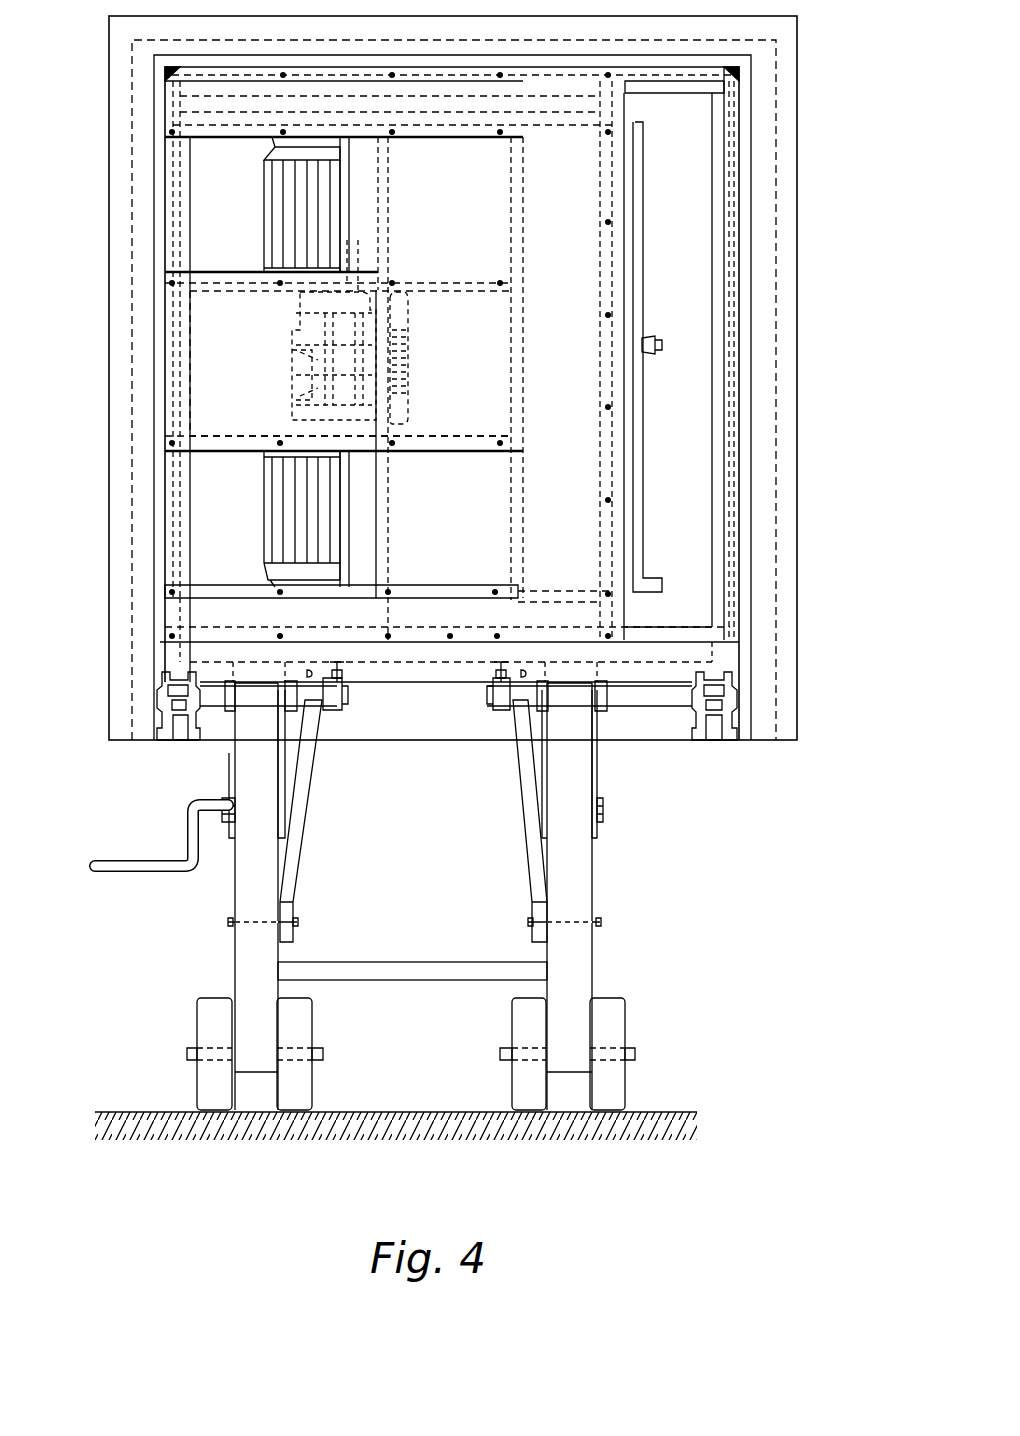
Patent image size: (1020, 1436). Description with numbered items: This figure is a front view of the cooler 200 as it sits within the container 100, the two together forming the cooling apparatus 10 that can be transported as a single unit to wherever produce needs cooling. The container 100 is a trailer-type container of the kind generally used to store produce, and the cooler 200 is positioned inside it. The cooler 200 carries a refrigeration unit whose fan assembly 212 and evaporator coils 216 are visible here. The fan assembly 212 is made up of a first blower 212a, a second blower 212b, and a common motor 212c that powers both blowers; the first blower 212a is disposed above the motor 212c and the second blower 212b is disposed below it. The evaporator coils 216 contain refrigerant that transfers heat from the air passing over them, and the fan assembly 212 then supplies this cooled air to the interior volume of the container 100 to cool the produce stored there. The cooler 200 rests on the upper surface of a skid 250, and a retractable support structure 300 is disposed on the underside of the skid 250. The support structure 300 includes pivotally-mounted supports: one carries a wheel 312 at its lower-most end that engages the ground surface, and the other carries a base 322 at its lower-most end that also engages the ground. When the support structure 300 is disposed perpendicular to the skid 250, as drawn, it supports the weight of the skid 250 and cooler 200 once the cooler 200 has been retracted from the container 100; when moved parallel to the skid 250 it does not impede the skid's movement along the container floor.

The cooling apparatus 10 is at (823, 143).
The container 100 is at (792, 322).
The cooler 200 is at (682, 482).
The evaporator coils 216 is at (643, 272).
The fan assembly 212 is at (213, 317).
The first blower 212a is at (263, 210).
The second blower 212b is at (263, 518).
The common motor 212c is at (300, 368).
The skid 250 is at (393, 682).
The retractable support structure 300 is at (627, 858).
The wheel 312 is at (312, 1033).
The base 322 is at (248, 1093).